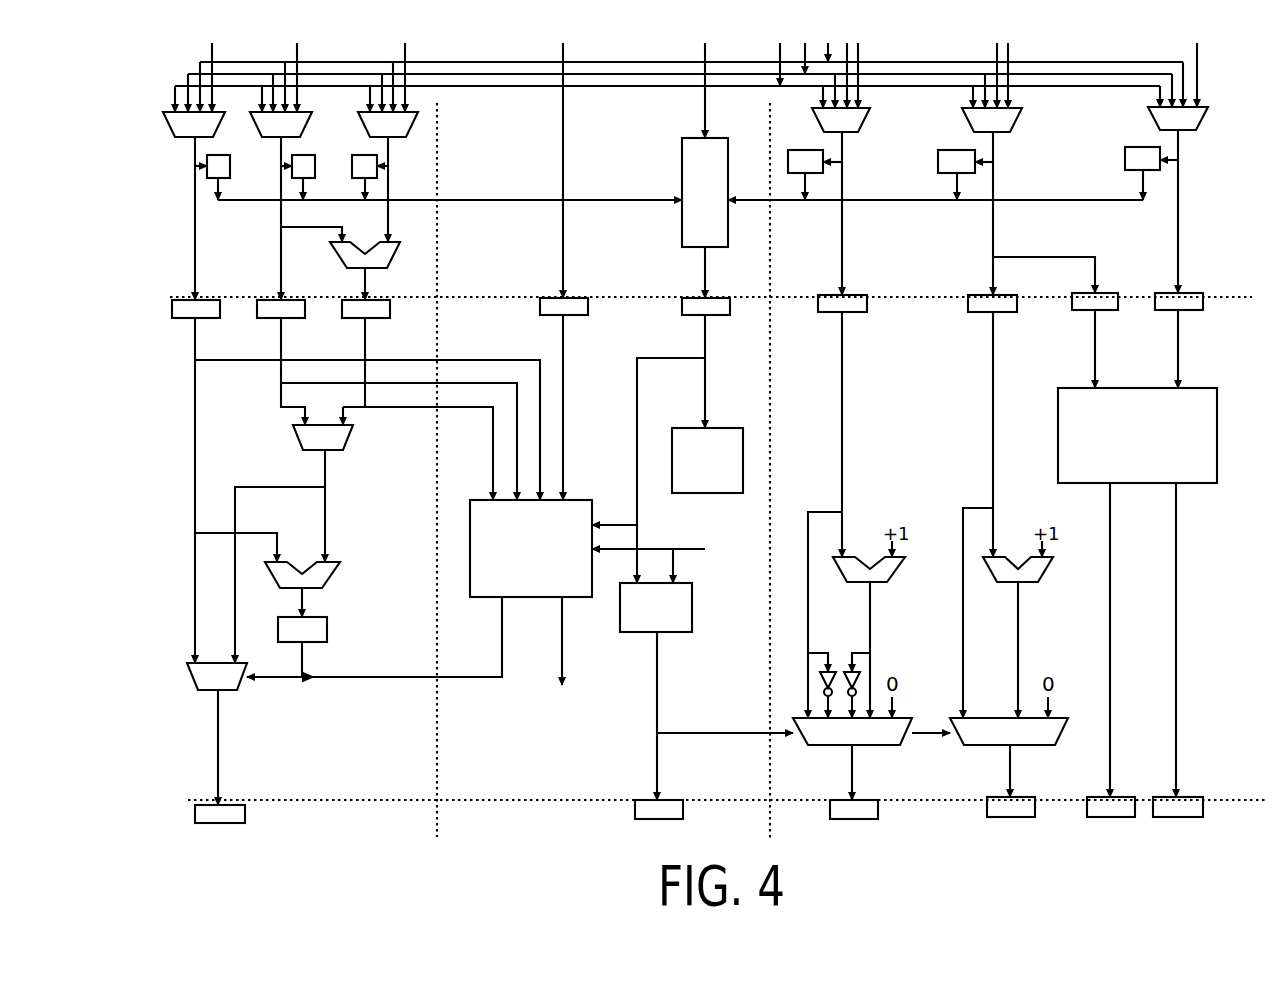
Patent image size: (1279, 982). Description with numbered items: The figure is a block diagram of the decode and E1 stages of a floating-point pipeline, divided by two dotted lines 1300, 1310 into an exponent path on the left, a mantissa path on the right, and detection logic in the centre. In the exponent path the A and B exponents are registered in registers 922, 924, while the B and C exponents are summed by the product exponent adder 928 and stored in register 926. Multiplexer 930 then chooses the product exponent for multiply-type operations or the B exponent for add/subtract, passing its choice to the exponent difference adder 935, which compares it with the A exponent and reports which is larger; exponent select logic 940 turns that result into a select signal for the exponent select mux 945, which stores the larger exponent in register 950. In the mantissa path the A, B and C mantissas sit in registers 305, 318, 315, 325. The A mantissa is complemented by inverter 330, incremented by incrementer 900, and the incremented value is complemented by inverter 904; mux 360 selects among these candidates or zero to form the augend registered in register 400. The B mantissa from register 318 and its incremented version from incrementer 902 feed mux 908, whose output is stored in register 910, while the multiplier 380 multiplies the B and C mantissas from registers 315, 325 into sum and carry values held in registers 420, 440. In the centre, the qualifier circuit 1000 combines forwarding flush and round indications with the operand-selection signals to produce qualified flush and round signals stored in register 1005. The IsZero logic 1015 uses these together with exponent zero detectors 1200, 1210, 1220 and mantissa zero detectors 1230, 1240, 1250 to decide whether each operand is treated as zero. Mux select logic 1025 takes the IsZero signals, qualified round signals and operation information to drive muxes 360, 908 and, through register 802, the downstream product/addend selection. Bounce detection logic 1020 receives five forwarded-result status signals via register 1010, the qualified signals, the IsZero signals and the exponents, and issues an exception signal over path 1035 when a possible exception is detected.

The exponent zero detector 1200 is at (210, 180).
The exponent zero detector 1210 is at (292, 178).
The exponent zero detector 1220 is at (377, 172).
The mantissa zero detector 1230 is at (823, 173).
The mantissa zero detector 1240 is at (938, 165).
The mantissa zero detector 1250 is at (1125, 158).
The line 1300 is at (437, 118).
The line 1310 is at (770, 128).
The qualifier circuit 1000 is at (682, 158).
The product exponent adder 928 is at (400, 255).
The register 922 is at (213, 318).
The register 924 is at (297, 318).
The register 926 is at (380, 318).
The register 1010 is at (577, 315).
The register 1005 is at (720, 315).
The register 305 is at (857, 312).
The register 318 is at (1005, 312).
The register 315 is at (1108, 310).
The register 325 is at (1192, 310).
The multiplier 380 is at (1058, 432).
The IsZero logic 1015 is at (743, 447).
The multiplexer 930 is at (353, 440).
The bounce detection logic 1020 is at (470, 528).
The exponent difference adder 935 is at (340, 575).
The exponent select logic 940 is at (327, 630).
The exponent select mux 945 is at (232, 690).
The mux select logic 1025 is at (692, 600).
The path 1035 is at (565, 663).
The incrementer 900 is at (882, 582).
The incrementer 902 is at (1030, 582).
The inverter 330 is at (820, 690).
The inverter 904 is at (850, 672).
The mux 360 is at (880, 745).
The mux 908 is at (1035, 745).
The register 950 is at (230, 823).
The register 802 is at (668, 819).
The register 400 is at (845, 819).
The register 910 is at (1000, 817).
The register 420 is at (1100, 817).
The register 440 is at (1190, 817).